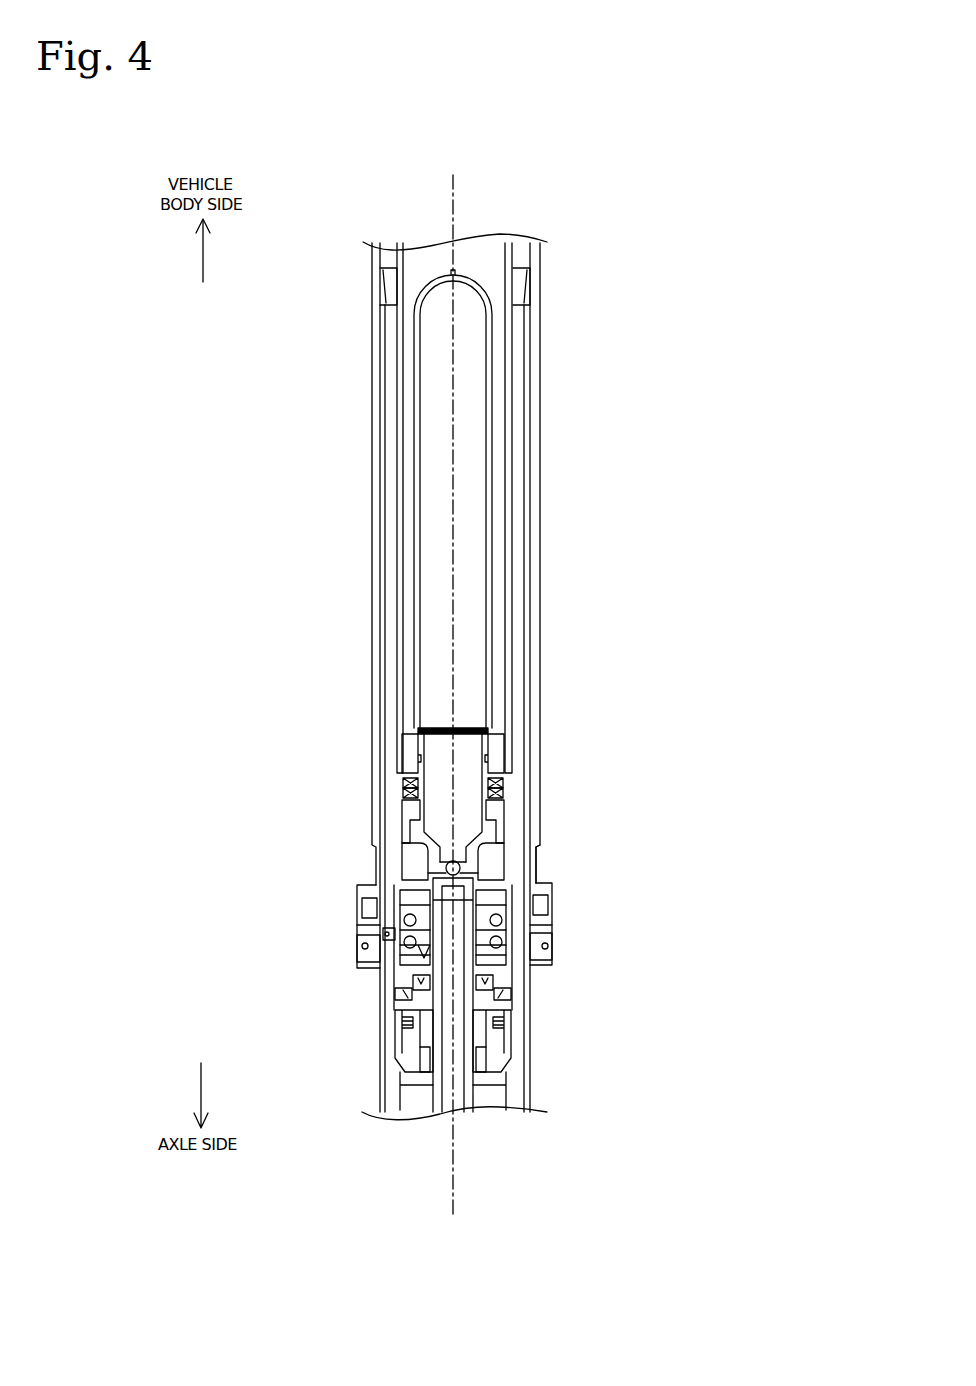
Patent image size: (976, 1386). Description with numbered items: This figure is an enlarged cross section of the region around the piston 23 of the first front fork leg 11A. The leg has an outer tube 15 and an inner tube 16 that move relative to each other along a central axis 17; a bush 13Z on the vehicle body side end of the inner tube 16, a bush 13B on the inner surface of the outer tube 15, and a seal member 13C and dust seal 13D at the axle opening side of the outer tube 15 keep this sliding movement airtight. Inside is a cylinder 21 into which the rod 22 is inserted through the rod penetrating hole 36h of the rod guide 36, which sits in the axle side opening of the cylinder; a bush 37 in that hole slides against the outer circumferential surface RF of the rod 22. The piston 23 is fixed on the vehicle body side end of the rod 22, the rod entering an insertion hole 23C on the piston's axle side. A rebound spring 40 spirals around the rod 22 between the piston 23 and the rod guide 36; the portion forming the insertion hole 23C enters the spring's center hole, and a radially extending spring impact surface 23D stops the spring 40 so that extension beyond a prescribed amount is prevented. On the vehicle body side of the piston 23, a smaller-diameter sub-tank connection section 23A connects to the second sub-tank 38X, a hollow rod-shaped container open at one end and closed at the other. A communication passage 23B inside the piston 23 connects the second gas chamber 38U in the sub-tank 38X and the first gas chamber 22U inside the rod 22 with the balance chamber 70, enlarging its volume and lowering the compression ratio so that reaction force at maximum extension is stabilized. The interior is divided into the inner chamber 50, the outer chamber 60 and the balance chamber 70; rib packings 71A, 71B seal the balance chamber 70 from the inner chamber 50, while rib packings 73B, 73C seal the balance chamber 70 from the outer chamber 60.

The first front fork leg 11A is at (636, 224).
The second sub-tank 38X is at (466, 271).
The inner chamber 50 is at (497, 260).
The bush 13Z is at (530, 327).
The cylinder 21 is at (398, 432).
The second gas chamber 38U is at (465, 425).
The central axis 17 is at (455, 515).
The outer tube 15 is at (372, 545).
The sub-tank connection section 23A is at (420, 745).
The piston 23 is at (500, 762).
The rib packing 71A is at (404, 781).
The rib packing 71B is at (404, 791).
The bush 13B is at (528, 855).
The balance chamber 70 is at (410, 862).
The communication passage 23B is at (476, 870).
The spring impact surface 23D is at (408, 913).
The seal member 13C is at (535, 920).
The rebound spring 40 is at (385, 932).
The insertion hole 23C is at (405, 947).
The dust seal 13D is at (548, 946).
The rib packing 73C is at (415, 980).
The rib packing 73B is at (400, 993).
The bush 37 is at (478, 1040).
The inner tube 16 is at (380, 1050).
The rod guide 36 is at (505, 1073).
The rod 22 is at (475, 1082).
The outer chamber 60 is at (500, 1090).
The first gas chamber 22U is at (442, 1097).
The rod penetrating hole 36h is at (460, 1092).
The outer circumferential surface of the rod RF is at (478, 1098).